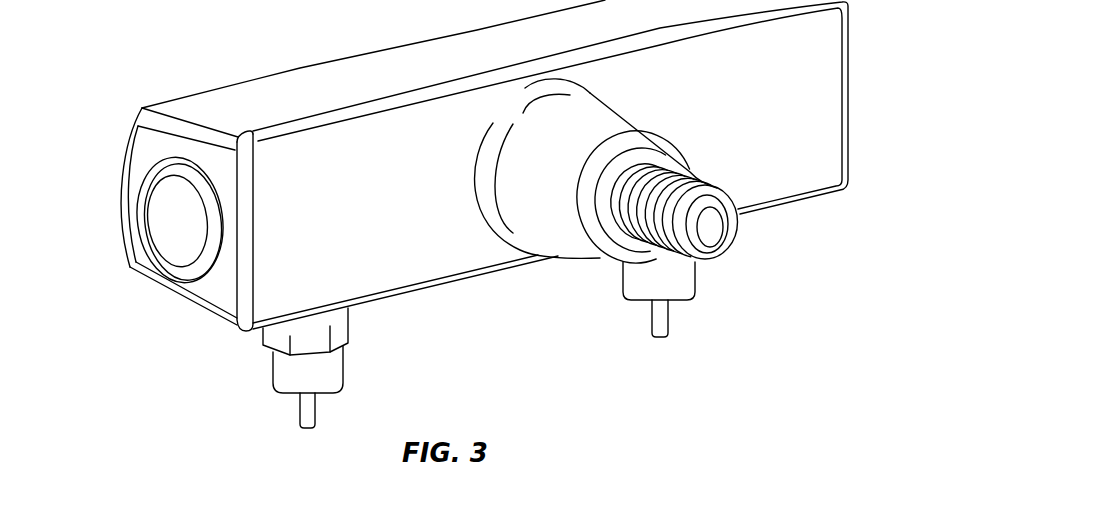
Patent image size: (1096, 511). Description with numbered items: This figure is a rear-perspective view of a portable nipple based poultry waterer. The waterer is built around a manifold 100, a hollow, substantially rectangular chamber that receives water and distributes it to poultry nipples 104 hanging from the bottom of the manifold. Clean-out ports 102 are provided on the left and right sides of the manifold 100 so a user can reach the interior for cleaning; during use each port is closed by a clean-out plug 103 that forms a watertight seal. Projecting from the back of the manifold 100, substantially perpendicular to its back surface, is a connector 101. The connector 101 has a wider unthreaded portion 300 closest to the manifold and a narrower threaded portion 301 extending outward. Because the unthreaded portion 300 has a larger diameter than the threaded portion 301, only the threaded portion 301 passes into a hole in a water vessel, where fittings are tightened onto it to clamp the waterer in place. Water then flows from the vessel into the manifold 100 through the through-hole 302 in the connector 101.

The manifold 100 is at (330, 82).
The connector 101 is at (635, 123).
The clean-out port 102 is at (133, 203).
The clean-out plug 103 is at (163, 228).
The poultry nipple 104 is at (272, 362).
The unthreaded portion 300 is at (552, 213).
The threaded portion 301 is at (700, 178).
The through-hole 302 is at (712, 228).